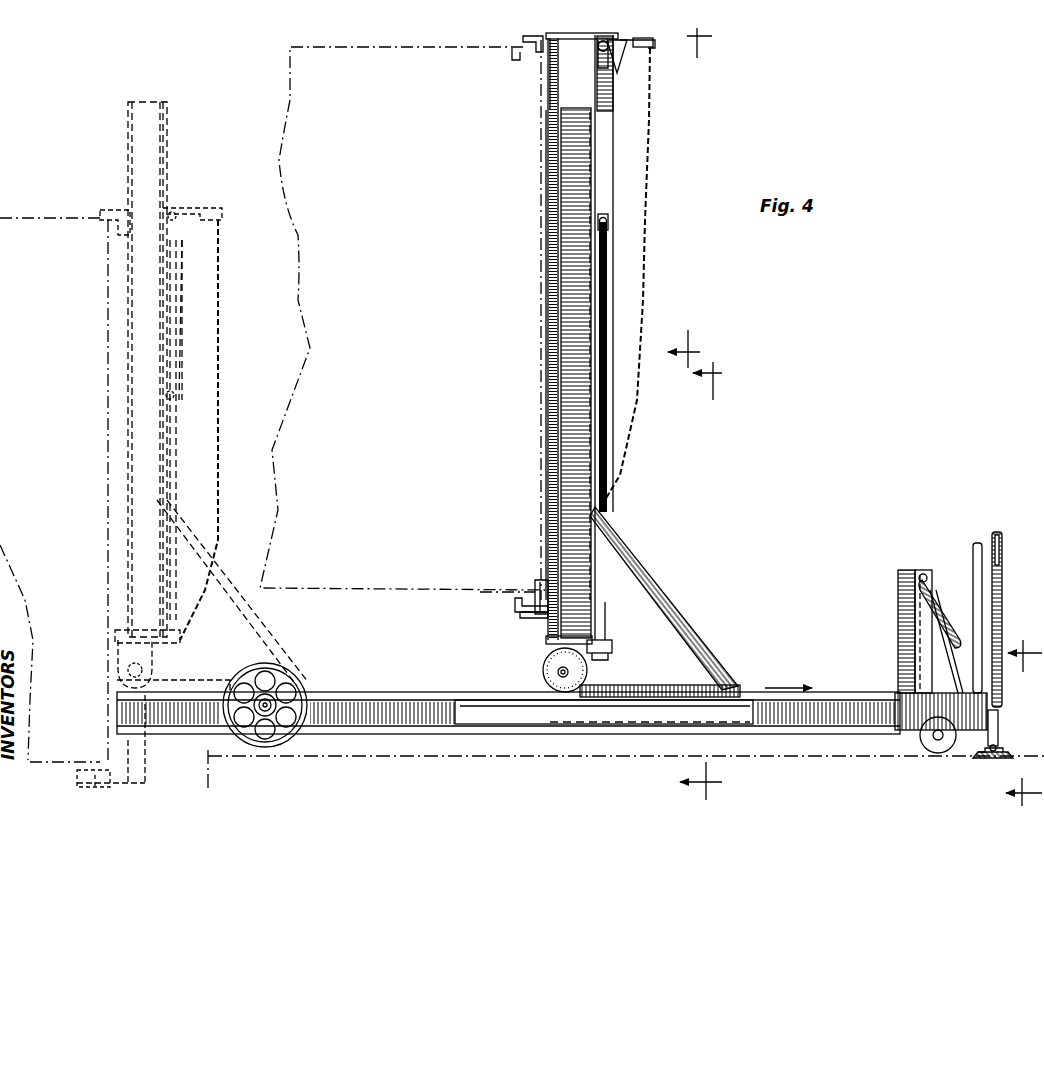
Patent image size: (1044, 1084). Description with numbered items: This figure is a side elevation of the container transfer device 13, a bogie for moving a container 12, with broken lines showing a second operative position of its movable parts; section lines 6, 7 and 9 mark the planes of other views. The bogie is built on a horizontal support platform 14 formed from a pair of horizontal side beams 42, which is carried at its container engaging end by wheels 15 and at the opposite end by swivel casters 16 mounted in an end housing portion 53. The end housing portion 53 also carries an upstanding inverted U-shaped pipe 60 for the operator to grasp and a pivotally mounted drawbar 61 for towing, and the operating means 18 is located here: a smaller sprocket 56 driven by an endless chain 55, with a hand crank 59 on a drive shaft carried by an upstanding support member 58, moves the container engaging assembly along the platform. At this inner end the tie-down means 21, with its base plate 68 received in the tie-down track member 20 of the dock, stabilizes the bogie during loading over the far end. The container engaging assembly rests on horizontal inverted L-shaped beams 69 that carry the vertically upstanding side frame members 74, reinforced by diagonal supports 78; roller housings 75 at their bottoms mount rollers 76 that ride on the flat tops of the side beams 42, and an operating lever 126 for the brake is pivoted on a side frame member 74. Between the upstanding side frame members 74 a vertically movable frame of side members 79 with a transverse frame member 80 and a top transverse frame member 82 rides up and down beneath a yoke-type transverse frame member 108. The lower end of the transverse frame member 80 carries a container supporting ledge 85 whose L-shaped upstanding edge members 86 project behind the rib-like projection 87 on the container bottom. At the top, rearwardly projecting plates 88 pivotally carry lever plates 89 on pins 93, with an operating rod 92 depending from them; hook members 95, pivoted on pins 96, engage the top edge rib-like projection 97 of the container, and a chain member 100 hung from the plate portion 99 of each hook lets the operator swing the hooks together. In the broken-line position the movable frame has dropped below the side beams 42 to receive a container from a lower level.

The container 12 is at (292, 90).
The container transfer device 13 is at (266, 128).
The horizontal support platform 14 is at (378, 692).
The wheels 15 is at (292, 742).
The swivel casters 16 is at (925, 748).
The operating means 18 is at (888, 582).
The tie-down track member 20 is at (975, 755).
The tie-down means 21 is at (1000, 728).
The horizontal side beams 42 is at (420, 700).
The end housing portion 53 is at (958, 690).
The endless chain 55 is at (918, 646).
The smaller sprocket 56 is at (928, 580).
The upstanding support member 58 is at (898, 604).
The hand crank 59 is at (940, 610).
The inverted U-shaped pipe 60 is at (977, 543).
The drawbar 61 is at (1002, 568).
The base plate 68 is at (996, 760).
The horizontal inverted L-shaped beams 69 is at (660, 686).
The vertically upstanding side frame members 74 is at (568, 165).
The roller housings 75 is at (572, 636).
The rollers 76 is at (546, 670).
The diagonal supports 78 is at (676, 610).
The side members 79 is at (550, 268).
The transverse frame member 80 is at (538, 582).
The top transverse frame member 82 is at (550, 78).
The container supporting ledge 85 is at (533, 618).
The L-shaped upstanding edge members 86 is at (520, 600).
The rib-like projection 87 is at (514, 612).
The rearwardly projecting plates 88 is at (597, 56).
The lever plates 89 is at (182, 346).
The operating rod 92 is at (620, 320).
The pins 93 is at (620, 62).
The hook members 95 is at (640, 38).
The pins 96 is at (514, 56).
The top edge rib-like projection 97 is at (522, 38).
The plate portion 99 is at (655, 50).
The chain member 100 is at (645, 283).
The yoke-type transverse frame member 108 is at (600, 242).
The operating lever 126 is at (606, 624).
The section line 9 is at (690, 198).
The section line 7 is at (703, 584).
The section line 6 is at (1020, 710).